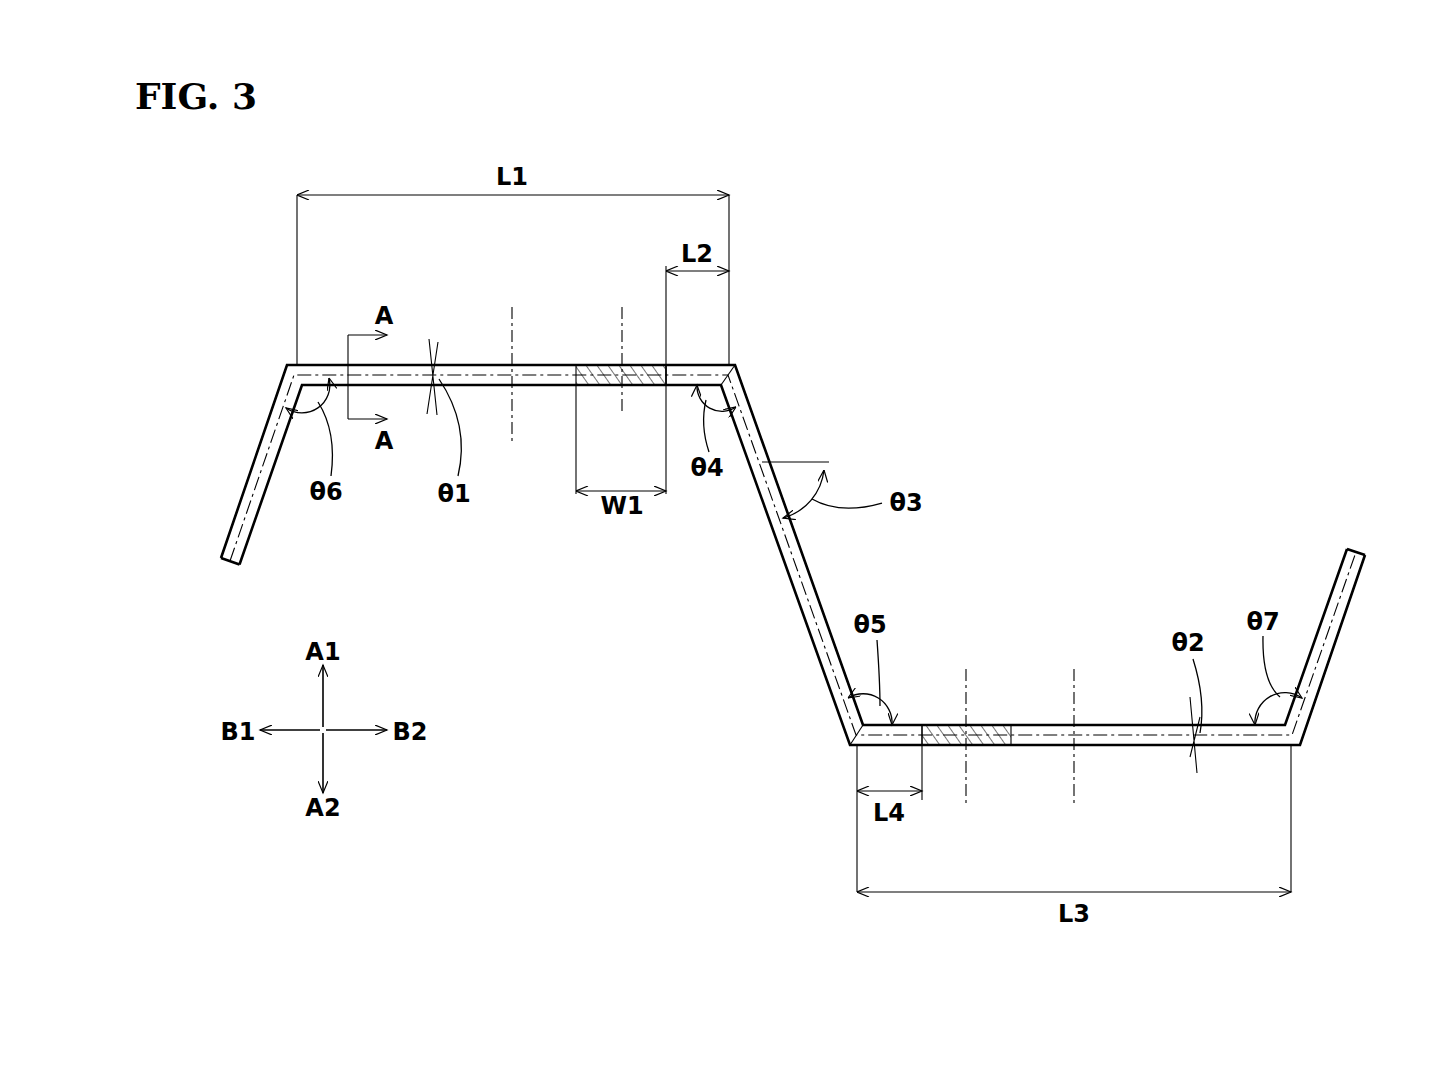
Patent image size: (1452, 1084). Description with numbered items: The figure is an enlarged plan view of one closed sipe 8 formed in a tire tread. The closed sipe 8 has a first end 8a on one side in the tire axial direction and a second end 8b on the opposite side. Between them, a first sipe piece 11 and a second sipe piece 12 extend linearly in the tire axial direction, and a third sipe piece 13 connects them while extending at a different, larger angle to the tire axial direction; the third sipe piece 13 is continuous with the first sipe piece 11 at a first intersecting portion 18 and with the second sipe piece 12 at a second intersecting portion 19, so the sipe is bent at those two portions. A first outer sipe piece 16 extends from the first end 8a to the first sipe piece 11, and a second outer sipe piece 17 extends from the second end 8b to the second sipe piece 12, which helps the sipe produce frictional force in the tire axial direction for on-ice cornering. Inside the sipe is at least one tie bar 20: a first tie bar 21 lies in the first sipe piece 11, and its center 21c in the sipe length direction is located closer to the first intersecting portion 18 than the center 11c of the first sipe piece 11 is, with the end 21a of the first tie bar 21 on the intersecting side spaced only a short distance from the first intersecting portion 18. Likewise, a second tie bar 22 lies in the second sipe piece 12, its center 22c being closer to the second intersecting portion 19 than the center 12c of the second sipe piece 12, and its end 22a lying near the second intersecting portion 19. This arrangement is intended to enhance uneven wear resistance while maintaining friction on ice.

The closed sipe 8 is at (262, 302).
The first end 8a is at (225, 563).
The second end 8b is at (1357, 558).
The first sipe piece 11 is at (468, 368).
The center of the first sipe piece 11c is at (512, 361).
The second sipe piece 12 is at (1130, 745).
The center of the second sipe piece 12c is at (1072, 723).
The third sipe piece 13 is at (783, 551).
The first outer sipe piece 16 is at (252, 492).
The second outer sipe piece 17 is at (1325, 652).
The first intersecting portion 18 is at (738, 371).
The second intersecting portion 19 is at (851, 735).
The tie bar 20 is at (596, 386).
The first tie bar 21 is at (601, 372).
The end of the first tie bar 21a is at (682, 372).
The center of the first tie bar 21c is at (622, 347).
The second tie bar 22 is at (942, 745).
The end of the second tie bar 22a is at (905, 722).
The center of the second tie bar 22c is at (965, 723).